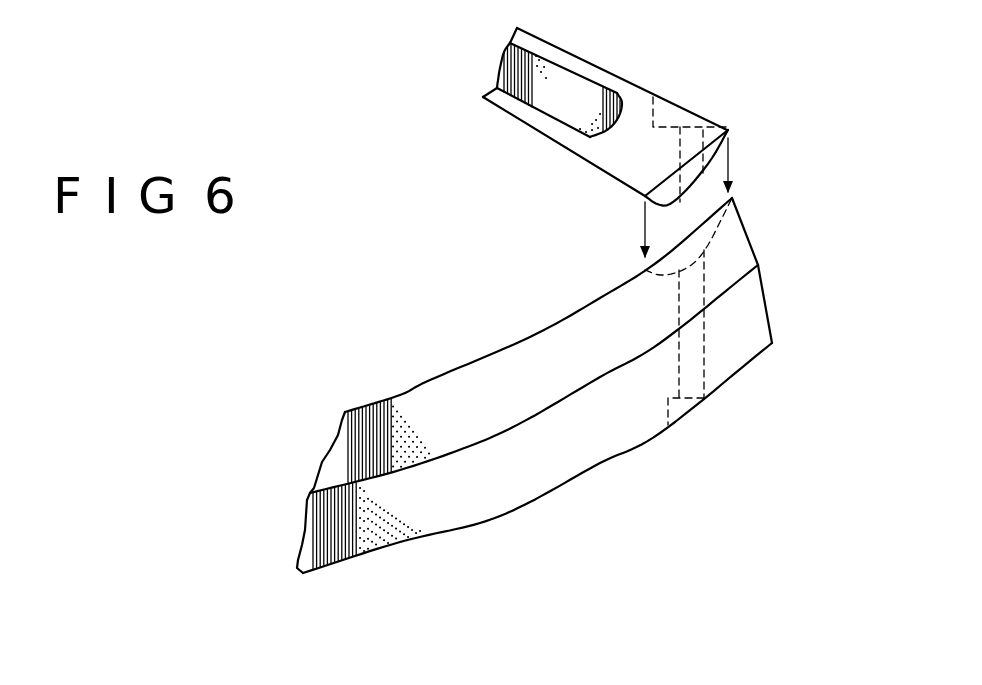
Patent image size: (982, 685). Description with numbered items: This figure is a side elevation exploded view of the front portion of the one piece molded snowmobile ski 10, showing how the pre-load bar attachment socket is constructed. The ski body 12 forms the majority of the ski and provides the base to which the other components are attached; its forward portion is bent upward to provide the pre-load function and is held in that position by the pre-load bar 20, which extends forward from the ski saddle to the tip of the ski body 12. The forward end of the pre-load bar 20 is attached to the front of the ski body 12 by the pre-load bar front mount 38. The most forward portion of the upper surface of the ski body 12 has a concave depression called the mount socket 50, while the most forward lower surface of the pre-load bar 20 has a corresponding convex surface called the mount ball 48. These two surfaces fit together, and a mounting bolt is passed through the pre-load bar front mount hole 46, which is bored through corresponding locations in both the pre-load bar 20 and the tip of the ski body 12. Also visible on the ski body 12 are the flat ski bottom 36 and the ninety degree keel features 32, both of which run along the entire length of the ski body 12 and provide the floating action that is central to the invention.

The one piece molded snowmobile ski 10 is at (494, 385).
The ski body 12 is at (312, 428).
The pre-load bar 20 is at (560, 150).
The ninety degree keel features 32 is at (307, 532).
The flat ski bottom 36 is at (518, 430).
The pre-load bar front mount 38 is at (728, 128).
The pre-load bar front mount hole 46 is at (697, 402).
The mount ball 48 is at (710, 173).
The mount socket 50 is at (713, 237).